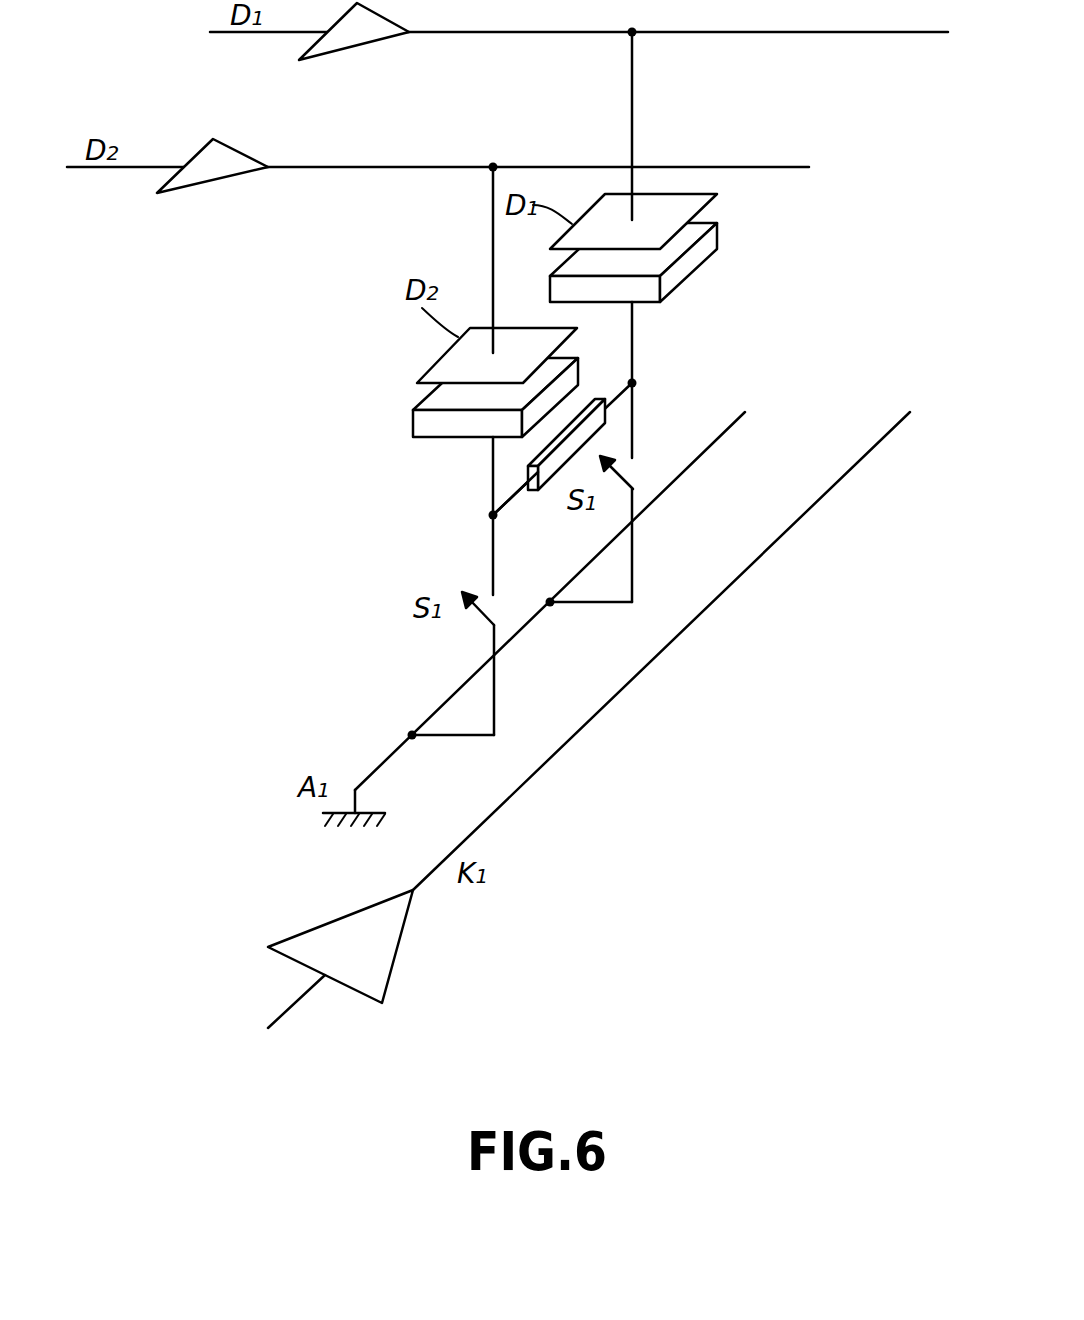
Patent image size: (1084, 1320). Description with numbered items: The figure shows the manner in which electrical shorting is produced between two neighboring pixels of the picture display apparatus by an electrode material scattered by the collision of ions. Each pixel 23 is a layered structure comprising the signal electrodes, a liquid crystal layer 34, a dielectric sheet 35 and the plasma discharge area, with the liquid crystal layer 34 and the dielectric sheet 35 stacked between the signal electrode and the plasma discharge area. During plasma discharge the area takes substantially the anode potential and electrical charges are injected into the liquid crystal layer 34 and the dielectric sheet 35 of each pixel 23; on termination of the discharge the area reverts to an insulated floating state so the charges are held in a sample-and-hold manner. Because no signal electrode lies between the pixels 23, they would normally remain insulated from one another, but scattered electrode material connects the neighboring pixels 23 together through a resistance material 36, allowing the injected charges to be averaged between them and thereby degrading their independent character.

The pixel 23 is at (583, 337).
The liquid crystal layer 34 is at (715, 210).
The dielectric sheet 35 is at (712, 243).
The resistance material 36 is at (605, 418).